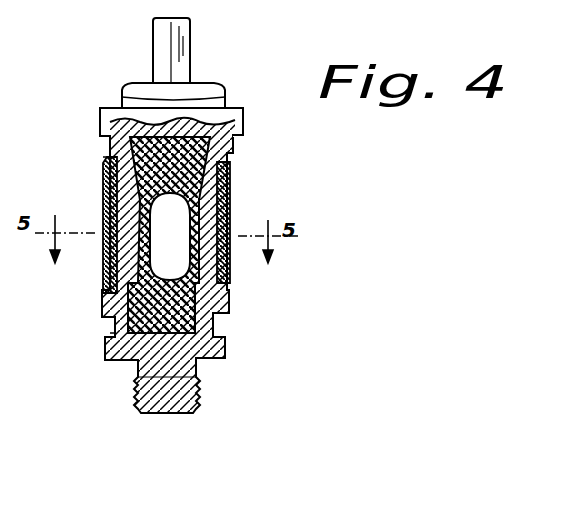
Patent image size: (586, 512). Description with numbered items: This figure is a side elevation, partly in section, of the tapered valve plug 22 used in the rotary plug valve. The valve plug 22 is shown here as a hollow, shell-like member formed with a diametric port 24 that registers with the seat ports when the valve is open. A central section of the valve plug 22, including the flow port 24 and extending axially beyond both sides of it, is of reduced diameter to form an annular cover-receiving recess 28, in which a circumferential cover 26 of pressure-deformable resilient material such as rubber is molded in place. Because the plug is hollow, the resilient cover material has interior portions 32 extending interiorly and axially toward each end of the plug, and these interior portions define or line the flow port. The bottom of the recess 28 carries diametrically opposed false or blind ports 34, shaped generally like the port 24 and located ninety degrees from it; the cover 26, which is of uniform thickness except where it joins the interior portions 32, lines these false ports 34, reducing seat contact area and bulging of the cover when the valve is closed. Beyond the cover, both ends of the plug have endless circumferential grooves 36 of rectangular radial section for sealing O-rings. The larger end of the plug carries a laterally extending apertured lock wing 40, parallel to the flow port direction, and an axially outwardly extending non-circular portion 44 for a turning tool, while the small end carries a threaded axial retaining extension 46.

The valve plug 22 is at (236, 160).
The diametric port 24 is at (162, 197).
The circumferential cover 26 is at (100, 297).
The annular cover-receiving recess 28 is at (100, 170).
The interior portions 32 is at (222, 117).
The false or blind ports 34 is at (110, 222).
The circumferential grooves 36 is at (238, 137).
The lock wing 40 is at (207, 90).
The non-circular portion 44 is at (190, 33).
The axial retaining extension 46 is at (170, 413).